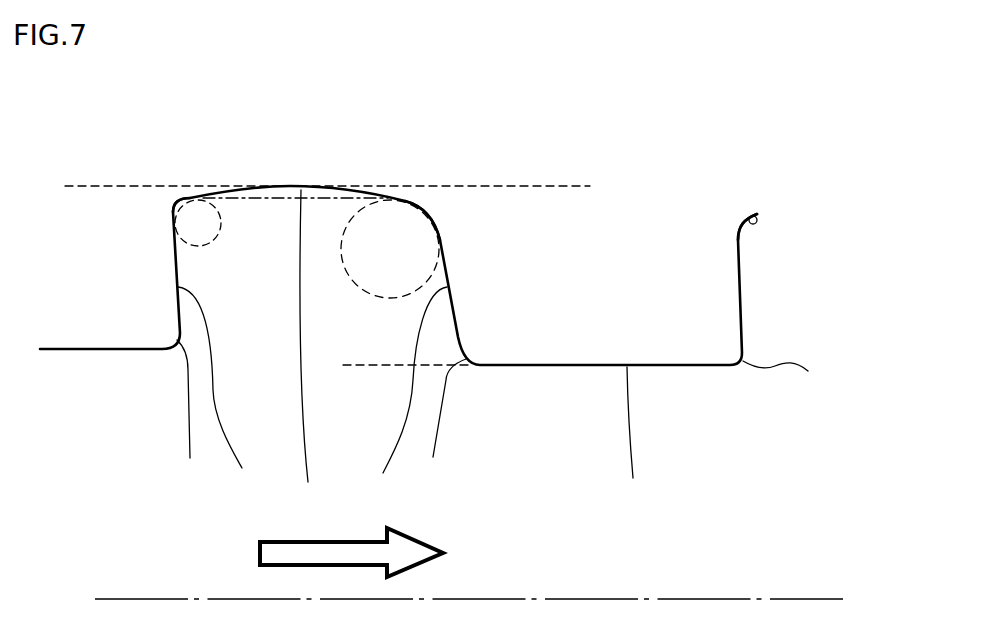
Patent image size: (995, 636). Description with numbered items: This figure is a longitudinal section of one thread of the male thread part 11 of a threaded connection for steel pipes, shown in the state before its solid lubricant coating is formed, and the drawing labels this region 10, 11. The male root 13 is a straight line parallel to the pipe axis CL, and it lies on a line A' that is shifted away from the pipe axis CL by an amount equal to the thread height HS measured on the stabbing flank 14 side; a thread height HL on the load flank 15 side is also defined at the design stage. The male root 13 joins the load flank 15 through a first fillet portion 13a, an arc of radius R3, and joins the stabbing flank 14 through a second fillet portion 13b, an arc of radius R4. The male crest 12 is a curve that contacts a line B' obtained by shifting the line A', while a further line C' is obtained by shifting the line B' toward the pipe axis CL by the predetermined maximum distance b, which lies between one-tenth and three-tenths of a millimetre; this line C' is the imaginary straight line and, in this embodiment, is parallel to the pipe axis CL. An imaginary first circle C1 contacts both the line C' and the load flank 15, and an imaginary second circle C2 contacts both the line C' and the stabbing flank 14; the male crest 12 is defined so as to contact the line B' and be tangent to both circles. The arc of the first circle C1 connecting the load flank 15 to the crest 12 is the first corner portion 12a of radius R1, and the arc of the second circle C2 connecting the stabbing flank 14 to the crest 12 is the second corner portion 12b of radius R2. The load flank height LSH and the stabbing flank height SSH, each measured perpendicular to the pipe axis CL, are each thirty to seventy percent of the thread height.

The rail 10 is at (467, 337).
The male thread part 11 is at (398, 275).
The male crest 12 is at (313, 349).
The first corner portion 12a is at (193, 198).
The second corner portion 12b is at (413, 202).
The male root 13 is at (641, 438).
The first fillet portion 13a is at (510, 411).
The second fillet portion 13b is at (436, 421).
The stabbing flank 14 is at (406, 393).
The load flank 15 is at (808, 295).
The radius of the first corner portion R1 is at (177, 207).
The radius of the second corner portion R2 is at (433, 223).
The radius of the first fillet portion R3 is at (168, 334).
The radius of the second fillet portion R4 is at (484, 341).
The imaginary first circle C1 is at (215, 244).
The imaginary second circle C2 is at (352, 285).
The line A' is at (402, 401).
The line B' is at (420, 149).
The imaginary straight line C' is at (358, 156).
The thread height on the load flank side HL is at (65, 349).
The load flank height LSH is at (173, 220).
The stabbing flank height SSH is at (440, 240).
The thread height on the stabbing flank side HS is at (583, 186).
The maximum distance b is at (288, 235).
The pipe axis CL is at (482, 599).